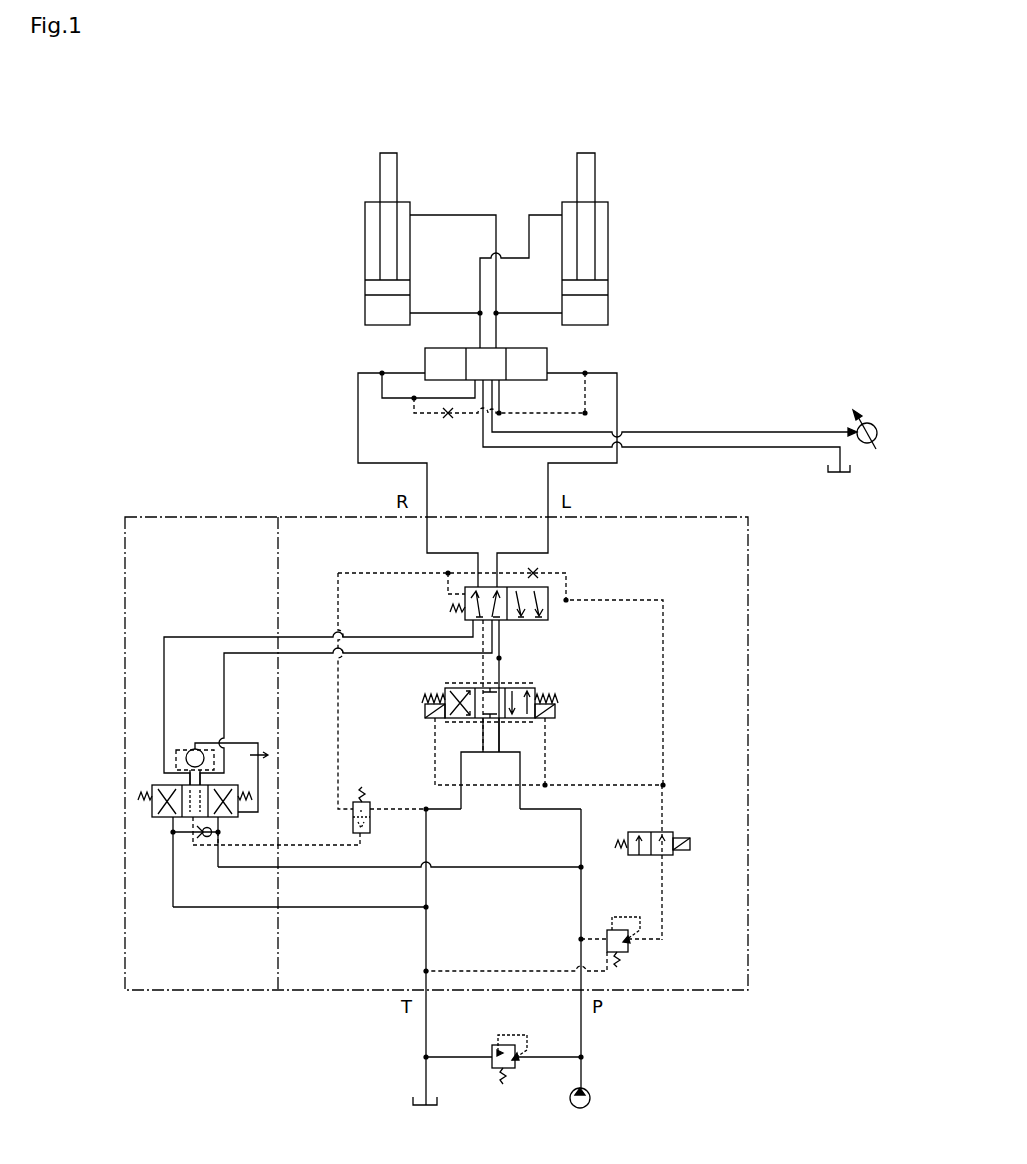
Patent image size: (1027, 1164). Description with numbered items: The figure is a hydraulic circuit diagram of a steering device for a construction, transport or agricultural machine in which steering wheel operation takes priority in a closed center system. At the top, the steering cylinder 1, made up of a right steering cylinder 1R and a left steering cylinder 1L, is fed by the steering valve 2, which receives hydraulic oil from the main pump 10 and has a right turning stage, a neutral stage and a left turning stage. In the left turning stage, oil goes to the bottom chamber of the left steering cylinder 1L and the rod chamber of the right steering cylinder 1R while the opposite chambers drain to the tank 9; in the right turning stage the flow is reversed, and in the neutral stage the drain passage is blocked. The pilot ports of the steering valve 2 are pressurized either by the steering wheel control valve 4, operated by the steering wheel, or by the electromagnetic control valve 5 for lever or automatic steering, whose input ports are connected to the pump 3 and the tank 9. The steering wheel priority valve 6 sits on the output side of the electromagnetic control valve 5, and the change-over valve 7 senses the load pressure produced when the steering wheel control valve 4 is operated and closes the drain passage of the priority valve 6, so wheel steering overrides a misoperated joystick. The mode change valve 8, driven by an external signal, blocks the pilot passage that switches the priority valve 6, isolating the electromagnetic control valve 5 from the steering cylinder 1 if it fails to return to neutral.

The steering cylinder 1 is at (398, 239).
The right steering cylinder 1R is at (369, 239).
The left steering cylinder 1L is at (605, 239).
The steering valve 2 is at (573, 357).
The pump 3 is at (627, 1097).
The steering wheel control valve 4 is at (167, 825).
The electromagnetic control valve for lever or automatic steering 5 is at (450, 675).
The steering wheel priority valve 6 is at (548, 582).
The change-over valve 7 is at (360, 838).
The mode change valve 8 is at (685, 862).
The tank 9 is at (645, 805).
The main pump 10 is at (825, 412).